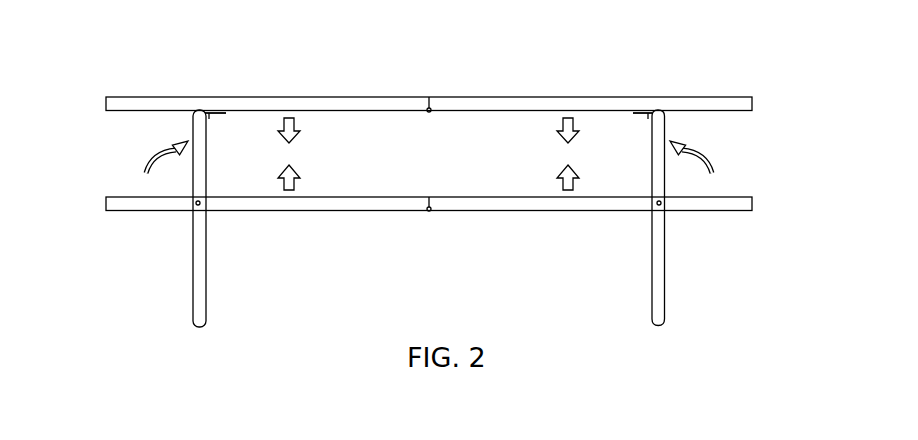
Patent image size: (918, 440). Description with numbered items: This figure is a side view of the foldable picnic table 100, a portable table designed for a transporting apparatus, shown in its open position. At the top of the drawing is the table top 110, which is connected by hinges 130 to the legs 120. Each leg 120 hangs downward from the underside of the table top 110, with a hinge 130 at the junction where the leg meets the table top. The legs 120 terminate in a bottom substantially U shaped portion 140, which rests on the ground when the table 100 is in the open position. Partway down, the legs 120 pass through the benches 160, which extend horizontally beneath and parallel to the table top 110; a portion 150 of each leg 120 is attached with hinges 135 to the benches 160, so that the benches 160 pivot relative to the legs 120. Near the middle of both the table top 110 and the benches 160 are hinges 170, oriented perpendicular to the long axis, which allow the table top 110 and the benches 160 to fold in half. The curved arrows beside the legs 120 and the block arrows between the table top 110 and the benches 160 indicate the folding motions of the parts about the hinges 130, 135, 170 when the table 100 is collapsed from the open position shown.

The foldable picnic table 100 is at (629, 62).
The table top 110 is at (106, 102).
The legs 120 is at (661, 170).
The hinges 130 is at (648, 113).
The hinges 135 is at (653, 212).
The bottom substantially U shaped portion 140 is at (658, 323).
The portion of legs 150 is at (660, 287).
The benches 160 is at (106, 203).
The hinges 170 is at (430, 104).